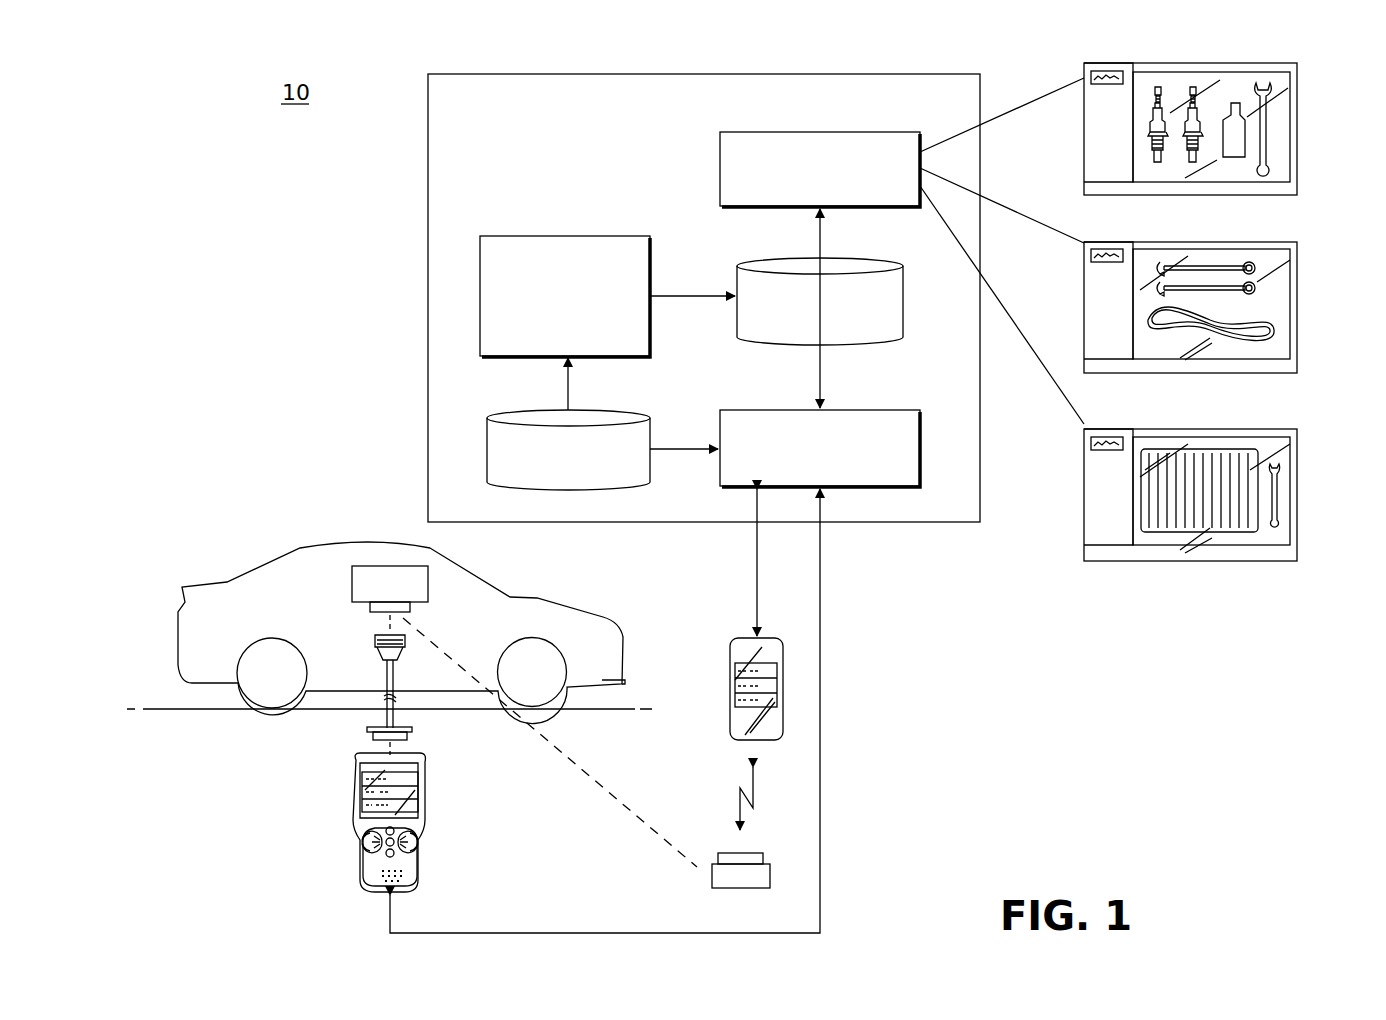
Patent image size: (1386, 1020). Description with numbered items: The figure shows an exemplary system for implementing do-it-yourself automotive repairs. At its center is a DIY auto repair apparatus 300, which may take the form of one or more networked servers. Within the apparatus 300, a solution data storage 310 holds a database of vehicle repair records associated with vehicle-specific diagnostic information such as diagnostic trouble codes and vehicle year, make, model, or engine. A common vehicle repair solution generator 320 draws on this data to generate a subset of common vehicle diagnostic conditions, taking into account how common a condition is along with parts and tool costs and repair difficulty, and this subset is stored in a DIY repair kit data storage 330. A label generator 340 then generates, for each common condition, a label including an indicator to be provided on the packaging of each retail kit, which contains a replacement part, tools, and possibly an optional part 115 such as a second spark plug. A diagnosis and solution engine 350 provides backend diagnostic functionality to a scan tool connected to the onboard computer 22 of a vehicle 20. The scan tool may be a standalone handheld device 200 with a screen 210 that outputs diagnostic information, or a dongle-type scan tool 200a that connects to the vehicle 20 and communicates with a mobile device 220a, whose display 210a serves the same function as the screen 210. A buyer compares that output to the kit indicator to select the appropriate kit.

The vehicle 20 is at (336, 541).
The onboard computer 22 is at (352, 580).
The optional part 115 is at (1193, 87).
The scan tool 200 is at (396, 817).
The dongle-type scan tool 200a is at (712, 882).
The screen 210 is at (370, 770).
The display 210a is at (723, 714).
The mobile device 220a is at (742, 740).
The DIY auto repair apparatus 300 is at (474, 73).
The solution data storage 310 is at (590, 410).
The common vehicle repair solution generator 320 is at (594, 236).
The DIY repair kit data storage 330 is at (860, 258).
The label generator 340 is at (870, 132).
The diagnosis and solution engine 350 is at (868, 410).